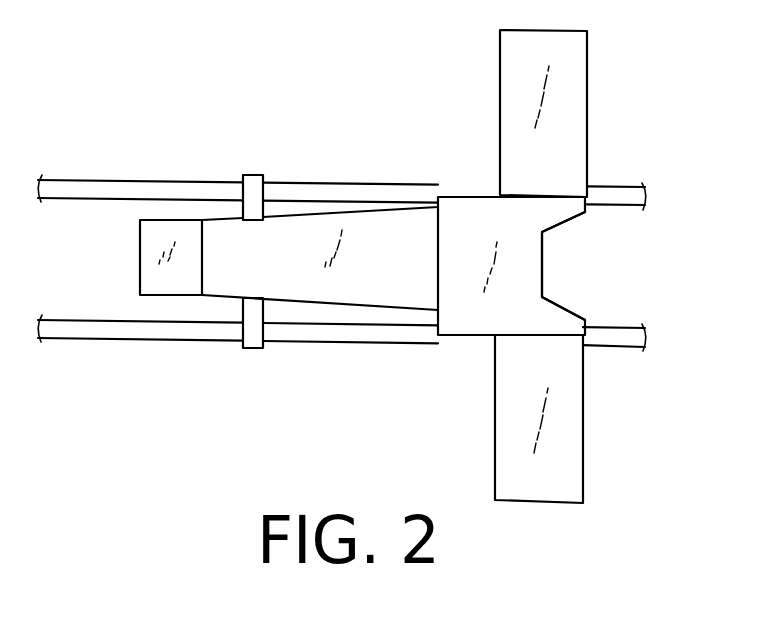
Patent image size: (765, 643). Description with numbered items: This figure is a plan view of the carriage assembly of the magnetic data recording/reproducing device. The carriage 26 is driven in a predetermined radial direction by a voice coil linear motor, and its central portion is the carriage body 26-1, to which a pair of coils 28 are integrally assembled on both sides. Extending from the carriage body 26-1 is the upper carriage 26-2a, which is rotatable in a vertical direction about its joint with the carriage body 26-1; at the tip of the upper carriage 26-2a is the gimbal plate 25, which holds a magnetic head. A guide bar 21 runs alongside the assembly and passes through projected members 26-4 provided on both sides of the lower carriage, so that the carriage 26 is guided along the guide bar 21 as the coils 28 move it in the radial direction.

The guide bar 21 is at (87, 178).
The gimbal plate 25 is at (160, 251).
The carriage 26 is at (553, 259).
The carriage body 26-1 is at (512, 296).
The upper carriage 26-2a is at (325, 238).
The projected members 26-4 is at (262, 173).
The coils 28 is at (575, 130).